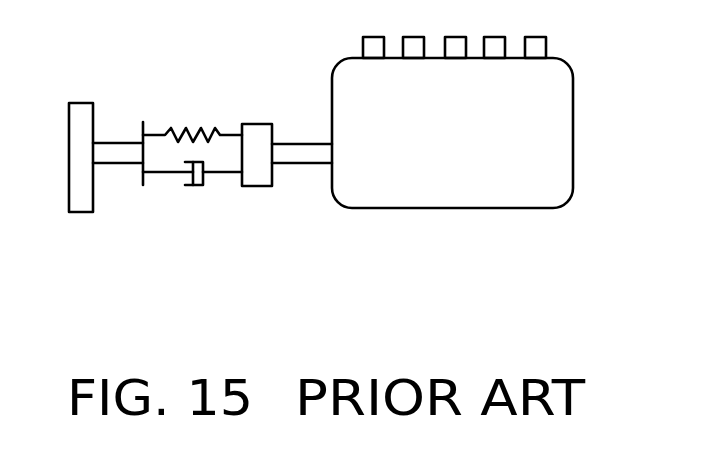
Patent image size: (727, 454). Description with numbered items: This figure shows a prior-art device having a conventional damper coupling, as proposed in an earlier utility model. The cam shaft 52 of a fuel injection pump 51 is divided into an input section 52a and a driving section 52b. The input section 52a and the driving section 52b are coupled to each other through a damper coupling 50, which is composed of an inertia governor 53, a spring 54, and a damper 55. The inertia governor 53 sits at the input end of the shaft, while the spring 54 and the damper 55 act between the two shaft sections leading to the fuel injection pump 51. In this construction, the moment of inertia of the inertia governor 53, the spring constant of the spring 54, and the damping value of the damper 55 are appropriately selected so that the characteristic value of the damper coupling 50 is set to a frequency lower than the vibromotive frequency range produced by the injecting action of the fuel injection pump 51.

The damper coupling 50 is at (172, 77).
The fuel injection pump 51 is at (545, 110).
The cam shaft 52 is at (295, 277).
The input section 52a is at (120, 165).
The driving section 52b is at (302, 153).
The inertia governor 53 is at (78, 103).
The spring 54 is at (187, 128).
The damper 55 is at (185, 187).